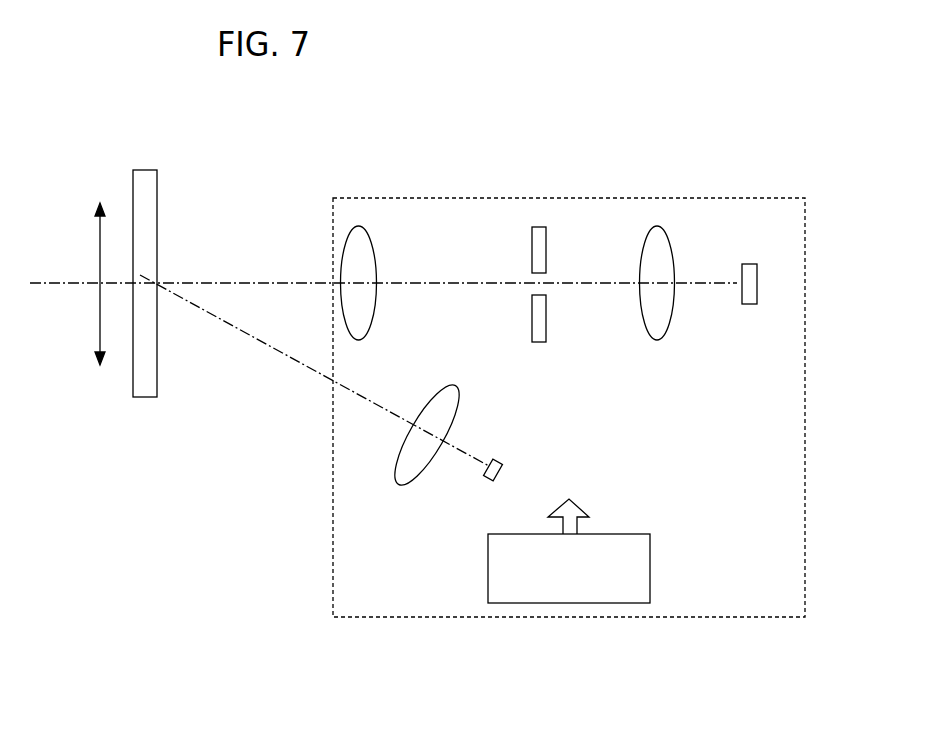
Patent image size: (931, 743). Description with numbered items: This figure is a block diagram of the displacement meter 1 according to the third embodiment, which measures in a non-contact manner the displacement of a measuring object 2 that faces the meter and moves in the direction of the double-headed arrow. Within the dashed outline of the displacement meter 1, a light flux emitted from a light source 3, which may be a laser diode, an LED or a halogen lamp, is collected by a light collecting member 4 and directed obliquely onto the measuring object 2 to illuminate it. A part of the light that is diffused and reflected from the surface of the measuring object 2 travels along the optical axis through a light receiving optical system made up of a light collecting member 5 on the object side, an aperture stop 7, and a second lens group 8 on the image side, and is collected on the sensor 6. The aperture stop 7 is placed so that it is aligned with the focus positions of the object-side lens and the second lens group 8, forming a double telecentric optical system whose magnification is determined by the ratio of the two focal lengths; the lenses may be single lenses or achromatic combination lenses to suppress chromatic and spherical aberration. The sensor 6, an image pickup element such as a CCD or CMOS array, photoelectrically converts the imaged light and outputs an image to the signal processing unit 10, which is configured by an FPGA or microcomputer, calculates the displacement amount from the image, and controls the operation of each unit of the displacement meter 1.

The displacement meter 1 is at (732, 198).
The measuring object 2 is at (157, 182).
The light source 3 is at (502, 466).
The light collecting member 4 is at (456, 410).
The light collecting member 5 is at (375, 251).
The sensor 6 is at (750, 264).
The aperture stop 7 is at (546, 250).
The second lens group 8 is at (672, 250).
The signal processing unit 10 is at (623, 534).